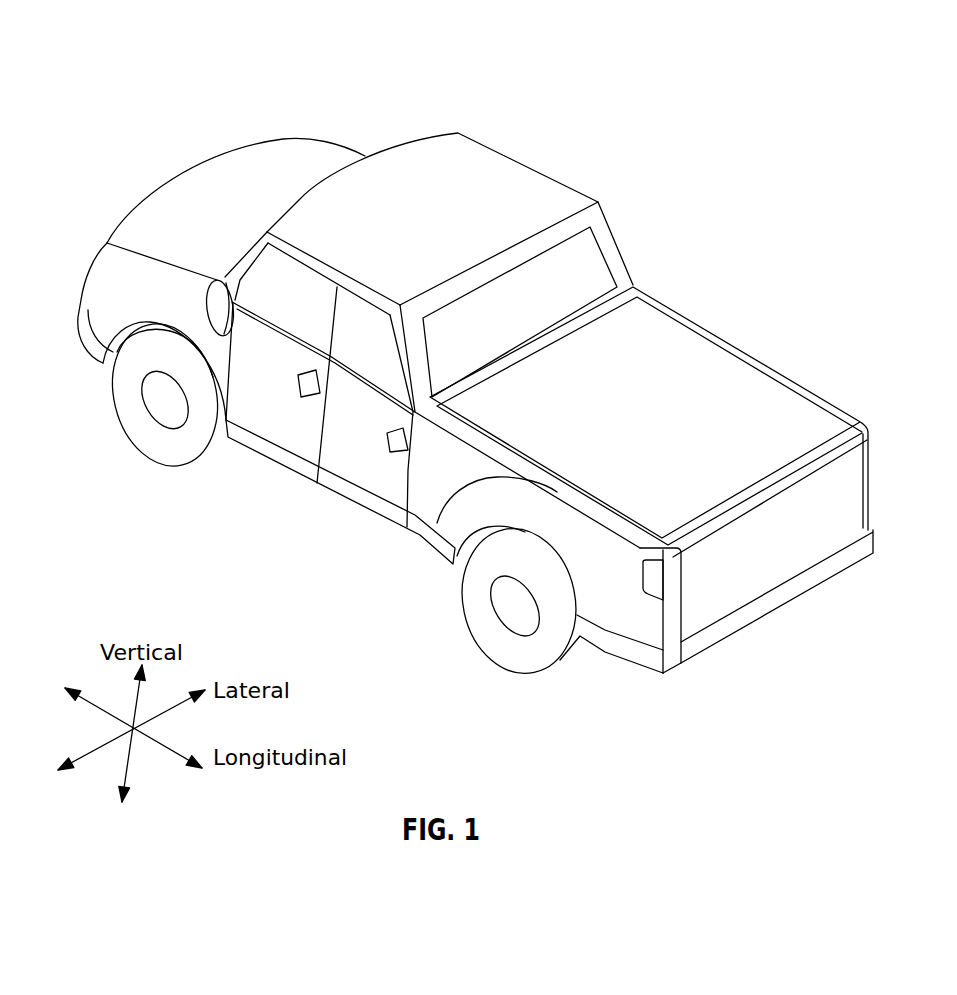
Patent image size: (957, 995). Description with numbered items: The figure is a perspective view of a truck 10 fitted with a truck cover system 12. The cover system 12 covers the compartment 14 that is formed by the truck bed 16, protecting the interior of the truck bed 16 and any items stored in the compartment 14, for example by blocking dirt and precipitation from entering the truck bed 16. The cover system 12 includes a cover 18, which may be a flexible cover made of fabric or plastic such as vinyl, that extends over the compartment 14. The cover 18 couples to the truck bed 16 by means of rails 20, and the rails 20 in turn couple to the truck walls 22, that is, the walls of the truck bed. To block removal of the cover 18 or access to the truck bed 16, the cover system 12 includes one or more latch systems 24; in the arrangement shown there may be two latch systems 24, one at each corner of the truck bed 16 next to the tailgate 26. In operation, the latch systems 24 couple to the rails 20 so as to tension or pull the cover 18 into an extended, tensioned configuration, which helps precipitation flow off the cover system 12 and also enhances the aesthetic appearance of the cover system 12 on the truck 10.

The truck 10 is at (118, 153).
The truck cover system 12 is at (893, 565).
The compartment 14 is at (545, 417).
The truck bed 16 is at (697, 203).
The cover 18 is at (707, 347).
The rails 20 is at (772, 380).
The truck walls 22 is at (615, 608).
The latch systems 24 is at (900, 443).
The tailgate 26 is at (771, 556).